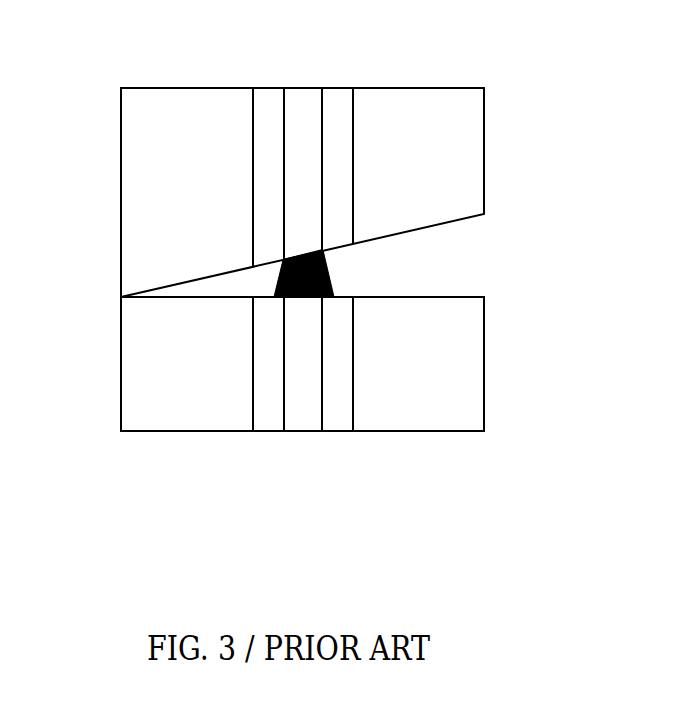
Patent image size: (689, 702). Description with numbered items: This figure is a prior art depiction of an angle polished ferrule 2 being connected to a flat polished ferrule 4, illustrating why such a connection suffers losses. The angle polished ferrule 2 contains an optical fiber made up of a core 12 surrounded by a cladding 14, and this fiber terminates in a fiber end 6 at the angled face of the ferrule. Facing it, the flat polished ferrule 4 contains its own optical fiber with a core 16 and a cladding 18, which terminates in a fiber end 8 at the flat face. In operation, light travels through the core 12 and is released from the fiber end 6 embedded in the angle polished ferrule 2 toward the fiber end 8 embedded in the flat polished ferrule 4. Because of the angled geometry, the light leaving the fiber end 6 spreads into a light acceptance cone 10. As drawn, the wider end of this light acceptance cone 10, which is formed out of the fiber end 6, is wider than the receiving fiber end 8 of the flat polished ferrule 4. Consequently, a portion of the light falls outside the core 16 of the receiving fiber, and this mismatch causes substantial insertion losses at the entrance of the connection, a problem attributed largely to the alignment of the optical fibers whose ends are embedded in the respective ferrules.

The angle polished ferrule 2 is at (461, 124).
The flat polished ferrule 4 is at (470, 393).
The fiber end 6 is at (305, 252).
The fiber end 8 is at (308, 290).
The light acceptance cone 10 is at (328, 275).
The core 12 is at (296, 139).
The cladding 14 is at (266, 109).
The core 16 is at (296, 406).
The cladding 18 is at (269, 371).